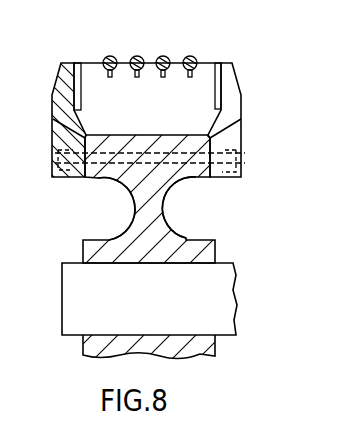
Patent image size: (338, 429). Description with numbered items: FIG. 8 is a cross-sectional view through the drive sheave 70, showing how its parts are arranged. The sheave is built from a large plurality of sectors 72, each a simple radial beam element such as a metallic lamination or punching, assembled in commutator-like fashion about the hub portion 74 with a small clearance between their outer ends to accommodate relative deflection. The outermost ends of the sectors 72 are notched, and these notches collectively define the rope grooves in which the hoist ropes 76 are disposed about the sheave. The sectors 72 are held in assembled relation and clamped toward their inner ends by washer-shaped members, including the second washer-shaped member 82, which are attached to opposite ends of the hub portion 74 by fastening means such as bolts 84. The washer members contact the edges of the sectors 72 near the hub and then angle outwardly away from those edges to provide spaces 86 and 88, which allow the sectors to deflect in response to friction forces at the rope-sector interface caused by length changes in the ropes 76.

The drive sheave 70 is at (275, 259).
The sectors 72 is at (237, 112).
The hub portion 74 is at (192, 179).
The hoist ropes 76 is at (162, 56).
The second washer-shaped member 82 is at (240, 71).
The bolts 84 is at (242, 162).
The space 86 is at (76, 103).
The space 88 is at (219, 105).